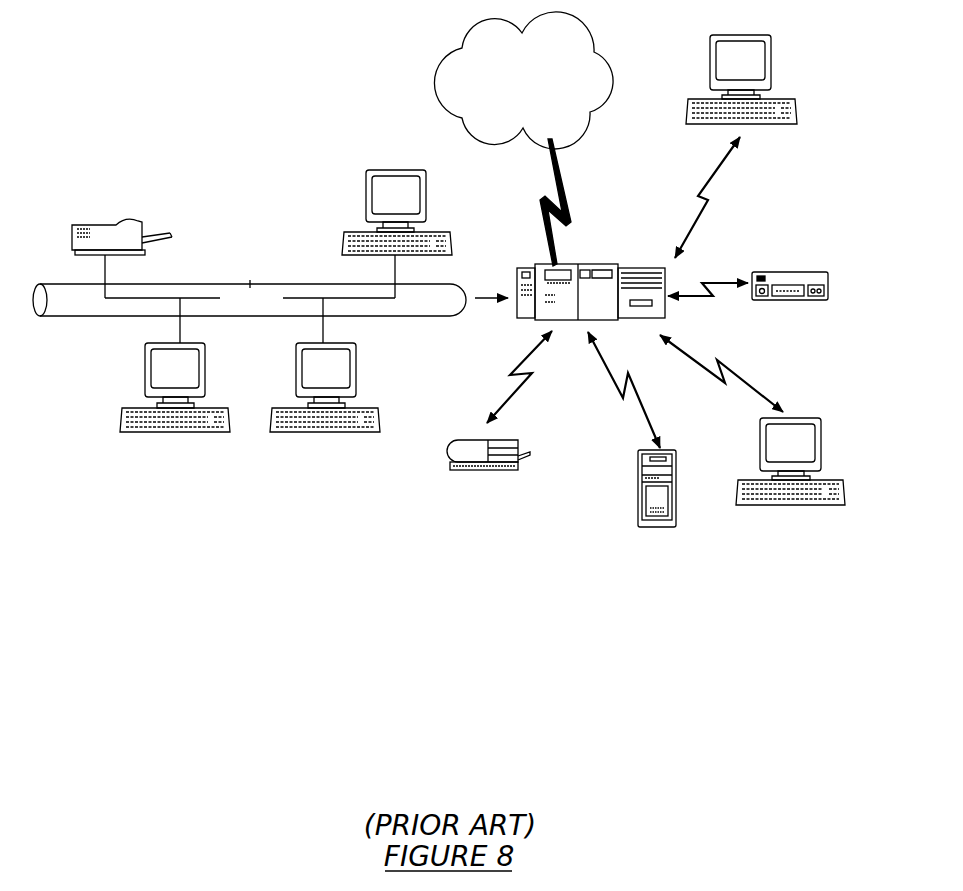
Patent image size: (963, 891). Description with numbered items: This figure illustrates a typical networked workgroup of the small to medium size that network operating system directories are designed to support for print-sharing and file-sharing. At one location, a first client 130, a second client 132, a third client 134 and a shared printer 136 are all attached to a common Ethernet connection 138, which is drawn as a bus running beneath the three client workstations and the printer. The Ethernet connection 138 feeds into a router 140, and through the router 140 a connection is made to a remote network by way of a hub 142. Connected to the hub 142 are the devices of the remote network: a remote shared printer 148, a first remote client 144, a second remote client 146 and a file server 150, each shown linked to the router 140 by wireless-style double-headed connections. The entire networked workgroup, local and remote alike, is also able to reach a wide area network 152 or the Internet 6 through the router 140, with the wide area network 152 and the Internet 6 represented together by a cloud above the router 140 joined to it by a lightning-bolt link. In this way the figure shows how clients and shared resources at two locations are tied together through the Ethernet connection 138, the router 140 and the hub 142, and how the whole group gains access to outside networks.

The Internet 6 is at (555, 96).
The first client 130 is at (207, 372).
The second client 132 is at (358, 372).
The third client 134 is at (388, 165).
The shared printer 136 is at (108, 222).
The Ethernet connection 138 is at (265, 288).
The router 140 is at (604, 265).
The hub 142 is at (793, 270).
The first remote client 144 is at (772, 65).
The second remote client 146 is at (797, 415).
The remote shared printer 148 is at (474, 470).
The file server 150 is at (680, 490).
The wide area network 152 is at (570, 58).